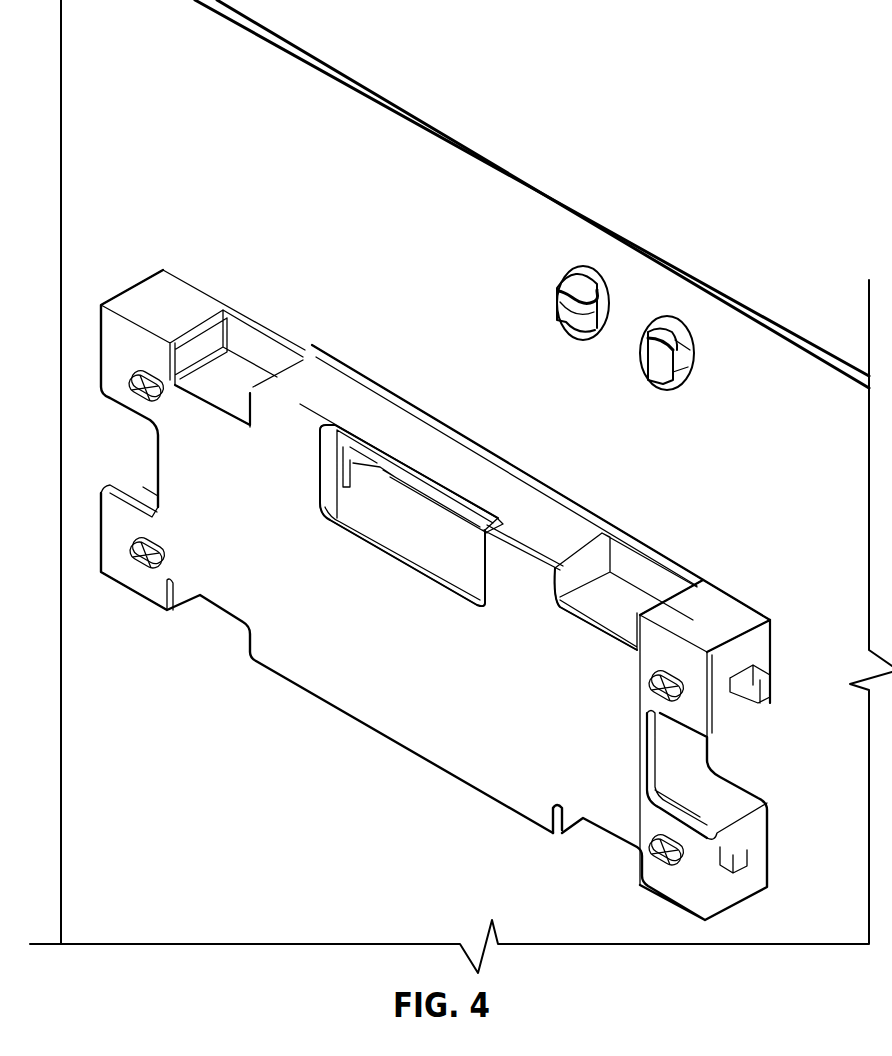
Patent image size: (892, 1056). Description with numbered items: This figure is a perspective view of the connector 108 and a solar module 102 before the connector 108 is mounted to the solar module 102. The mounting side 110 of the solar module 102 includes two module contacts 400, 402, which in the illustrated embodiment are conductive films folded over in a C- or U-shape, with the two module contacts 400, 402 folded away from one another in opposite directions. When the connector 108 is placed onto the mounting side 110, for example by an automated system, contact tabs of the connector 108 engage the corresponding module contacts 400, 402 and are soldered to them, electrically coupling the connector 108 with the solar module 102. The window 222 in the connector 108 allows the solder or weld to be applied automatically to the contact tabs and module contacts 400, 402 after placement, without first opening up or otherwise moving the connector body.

The solar module 102 is at (530, 186).
The mounting side 110 is at (567, 243).
The module contact 400 is at (597, 282).
The module contact 402 is at (663, 340).
The connector 108 is at (465, 595).
The window 222 is at (433, 530).